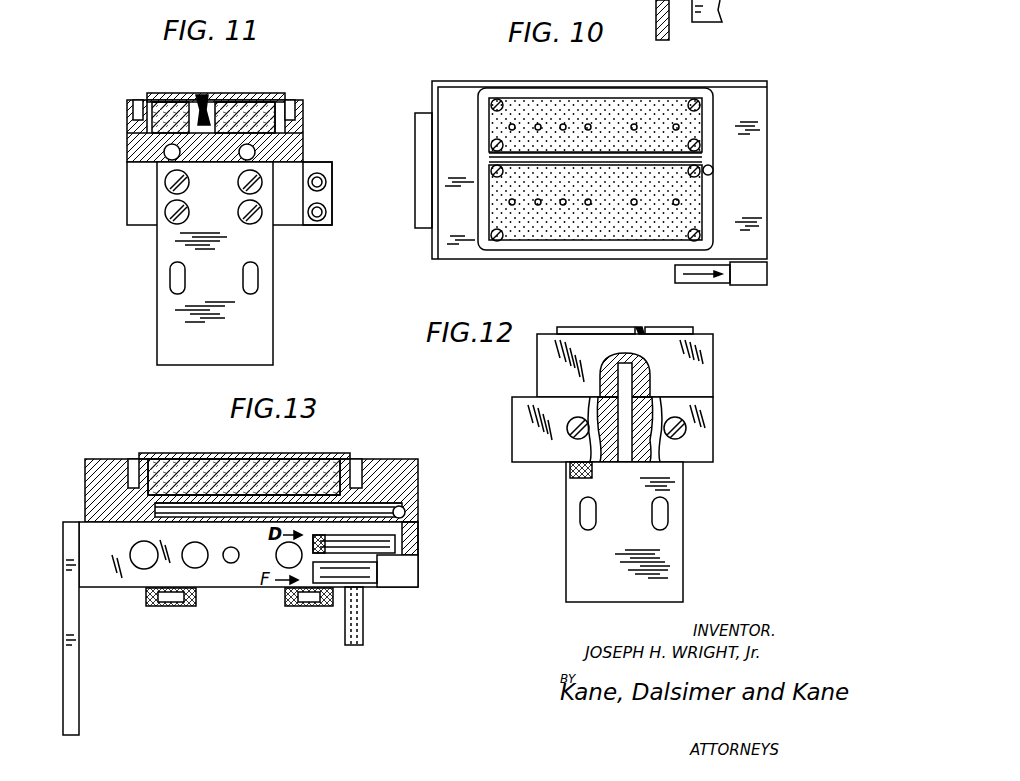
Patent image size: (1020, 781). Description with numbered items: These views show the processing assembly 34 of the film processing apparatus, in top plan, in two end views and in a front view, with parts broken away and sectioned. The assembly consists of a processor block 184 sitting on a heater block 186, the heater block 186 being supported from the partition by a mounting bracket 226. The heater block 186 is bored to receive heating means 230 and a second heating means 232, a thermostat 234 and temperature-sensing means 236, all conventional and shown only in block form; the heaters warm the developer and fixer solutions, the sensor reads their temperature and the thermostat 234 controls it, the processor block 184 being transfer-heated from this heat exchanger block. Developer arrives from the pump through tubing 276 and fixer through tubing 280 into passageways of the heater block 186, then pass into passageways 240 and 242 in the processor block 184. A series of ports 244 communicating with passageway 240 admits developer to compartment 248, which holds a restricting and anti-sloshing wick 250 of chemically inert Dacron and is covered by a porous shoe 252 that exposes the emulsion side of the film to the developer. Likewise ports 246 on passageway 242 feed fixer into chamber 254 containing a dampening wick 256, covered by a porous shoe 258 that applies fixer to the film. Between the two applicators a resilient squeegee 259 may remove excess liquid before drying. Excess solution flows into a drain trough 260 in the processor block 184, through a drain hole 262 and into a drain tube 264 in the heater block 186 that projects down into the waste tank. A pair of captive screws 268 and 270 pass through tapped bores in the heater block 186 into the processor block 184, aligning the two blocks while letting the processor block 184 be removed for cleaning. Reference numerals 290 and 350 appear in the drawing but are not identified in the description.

In FIG. 11, the processing assembly 34 is at (298, 92).
In FIG. 10, the processing assembly 34 is at (765, 75).
In FIG. 12, the processing assembly 34 is at (512, 379).
In FIG. 13, the processing assembly 34 is at (80, 438).
In FIG. 11, the processor block 184 is at (127, 162).
In FIG. 10, the processor block 184 is at (758, 150).
In FIG. 12, the processor block 184 is at (705, 346).
In FIG. 13, the processor block 184 is at (85, 488).
In FIG. 11, the heater block 186 is at (130, 222).
In FIG. 13, the heater block 186 is at (96, 588).
In FIG. 11, the mounting bracket 226 is at (273, 322).
In FIG. 10, the mounting bracket 226 is at (415, 213).
In FIG. 12, the mounting bracket 226 is at (576, 550).
In FIG. 13, the mounting bracket 226 is at (79, 686).
In FIG. 13, the heating means 230 is at (130, 553).
In FIG. 13, the heating means 232 is at (285, 552).
In FIG. 13, the thermostat 234 is at (196, 568).
In FIG. 13, the temperature-sensing means 236 is at (233, 563).
In FIG. 11, the passageway 240 is at (295, 150).
In FIG. 13, the passageway 240 is at (300, 500).
In FIG. 11, the passageway 242 is at (180, 160).
In FIG. 10, the ports 244 is at (583, 218).
In FIG. 13, the ports 244 is at (180, 472).
In FIG. 10, the ports 246 is at (634, 128).
In FIG. 11, the compartment 248 is at (300, 115).
In FIG. 11, the wick 250 is at (228, 105).
In FIG. 13, the wick 250 is at (296, 465).
In FIG. 11, the porous shoe 252 is at (265, 100).
In FIG. 10, the porous shoe 252 is at (512, 236).
In FIG. 12, the porous shoe 252 is at (597, 331).
In FIG. 13, the porous shoe 252 is at (236, 454).
In FIG. 11, the chamber 254 is at (152, 110).
In FIG. 11, the dampening wick 256 is at (165, 103).
In FIG. 11, the porous shoe 258 is at (182, 94).
In FIG. 10, the porous shoe 258 is at (520, 108).
In FIG. 12, the porous shoe 258 is at (675, 321).
In FIG. 11, the resilient squeegee 259 is at (201, 97).
In FIG. 10, the resilient squeegee 259 is at (500, 158).
In FIG. 12, the resilient squeegee 259 is at (638, 328).
In FIG. 11, the drain trough 260 is at (137, 113).
In FIG. 10, the drain trough 260 is at (482, 110).
In FIG. 13, the drain trough 260 is at (133, 465).
In FIG. 10, the drain hole 262 is at (714, 170).
In FIG. 12, the drain hole 262 is at (632, 370).
In FIG. 12, the drain tube 264 is at (632, 420).
In FIG. 13, the drain tube 264 is at (362, 645).
In FIG. 13, the captive screw 268 is at (150, 607).
In FIG. 13, the captive screw 270 is at (312, 607).
In FIG. 11, the tubing 276 is at (326, 182).
In FIG. 10, the tubing 276 is at (712, 284).
In FIG. 13, the tubing 276 is at (405, 520).
In FIG. 11, the tubing 280 is at (322, 222).
In FIG. 13, the tubing 280 is at (355, 588).
In FIG. 10, the bracket 290 is at (716, 22).
In FIG. 10, the bar 350 is at (660, 42).